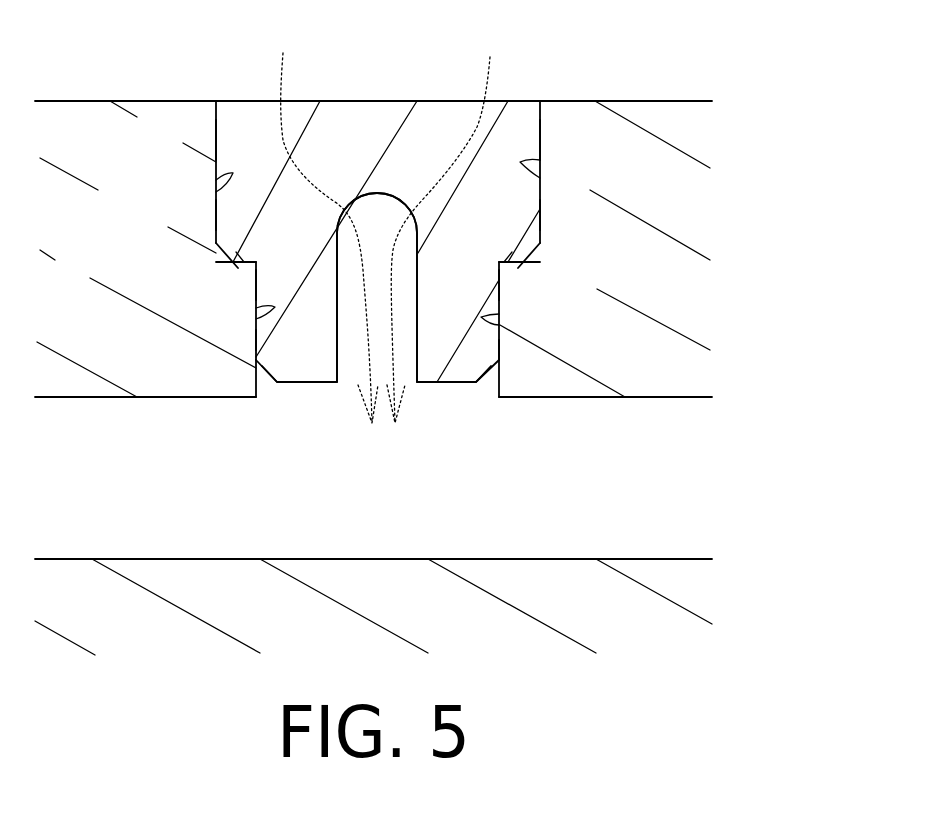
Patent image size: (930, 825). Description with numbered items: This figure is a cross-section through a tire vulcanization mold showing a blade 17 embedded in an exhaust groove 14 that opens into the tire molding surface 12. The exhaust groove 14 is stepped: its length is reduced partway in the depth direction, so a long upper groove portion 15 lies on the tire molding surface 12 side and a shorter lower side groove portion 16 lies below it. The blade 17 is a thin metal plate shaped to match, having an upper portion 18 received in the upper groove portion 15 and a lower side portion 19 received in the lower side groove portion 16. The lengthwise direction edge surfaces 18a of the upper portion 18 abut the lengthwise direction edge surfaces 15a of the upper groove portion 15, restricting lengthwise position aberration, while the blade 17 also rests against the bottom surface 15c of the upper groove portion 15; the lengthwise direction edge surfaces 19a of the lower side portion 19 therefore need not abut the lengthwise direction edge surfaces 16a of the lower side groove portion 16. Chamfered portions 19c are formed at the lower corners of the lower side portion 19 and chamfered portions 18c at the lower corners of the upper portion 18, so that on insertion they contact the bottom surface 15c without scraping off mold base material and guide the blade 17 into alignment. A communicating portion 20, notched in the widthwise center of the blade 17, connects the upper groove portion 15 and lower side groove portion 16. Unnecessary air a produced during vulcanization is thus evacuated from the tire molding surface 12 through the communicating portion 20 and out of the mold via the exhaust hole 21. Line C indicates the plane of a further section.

The tire molding surface 12 is at (582, 101).
The exhaust groove 14 is at (446, 84).
The upper groove portion 15 is at (200, 144).
The lengthwise direction edge surfaces of the upper groove portion 15a is at (216, 182).
The bottom surface of the upper groove portion 15c is at (240, 260).
The lower side groove portion 16 is at (240, 289).
The lengthwise direction edge surfaces of the lower side groove portion 16a is at (256, 312).
The blade 17 is at (338, 108).
The upper portion 18 is at (523, 144).
The lengthwise direction edge surfaces of the upper portion 18a is at (216, 212).
The chamfered portions 18c is at (216, 258).
The lower side portion 19 is at (482, 288).
The lengthwise direction edge surfaces of the lower side portion 19a is at (256, 339).
The chamfered portions 19c is at (276, 384).
The communicating portion 20 is at (340, 356).
The exhaust hole 21 is at (96, 416).
The unnecessary air a is at (385, 254).
The line C- C is at (80, 312).